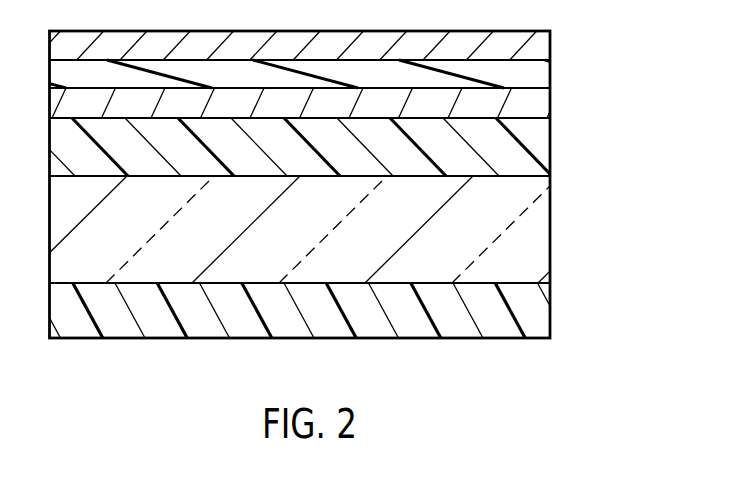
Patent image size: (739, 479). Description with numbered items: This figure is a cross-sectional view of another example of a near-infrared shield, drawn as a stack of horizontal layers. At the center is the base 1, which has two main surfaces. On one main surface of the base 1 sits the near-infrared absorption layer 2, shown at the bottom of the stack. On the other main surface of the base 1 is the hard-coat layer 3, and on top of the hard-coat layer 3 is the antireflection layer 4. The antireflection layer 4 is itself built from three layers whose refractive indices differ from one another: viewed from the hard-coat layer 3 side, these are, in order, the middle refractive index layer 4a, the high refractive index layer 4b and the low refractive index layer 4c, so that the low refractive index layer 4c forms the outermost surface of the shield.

The base 1 is at (522, 234).
The near-infrared absorption layer 2 is at (522, 314).
The hard-coat layer 3 is at (522, 151).
The antireflection layer 4 is at (325, 75).
The middle refractive index layer 4a is at (330, 103).
The high refractive index layer 4b is at (522, 78).
The low refractive index layer 4c is at (522, 52).